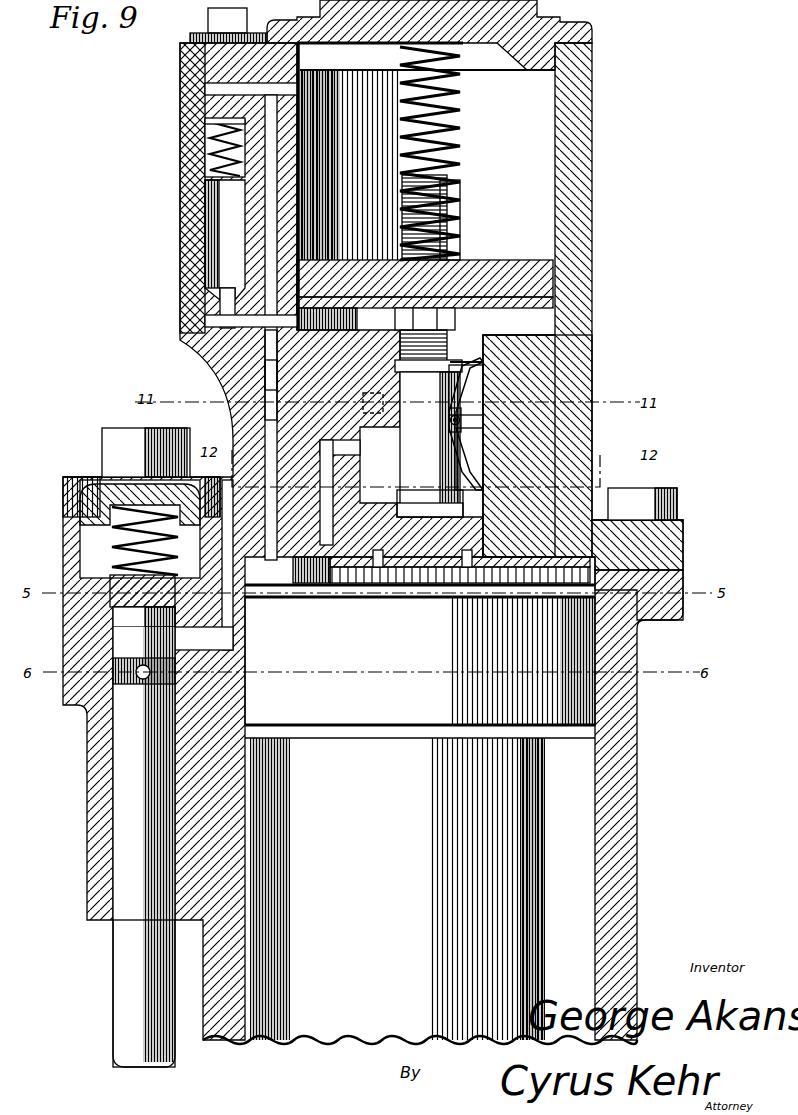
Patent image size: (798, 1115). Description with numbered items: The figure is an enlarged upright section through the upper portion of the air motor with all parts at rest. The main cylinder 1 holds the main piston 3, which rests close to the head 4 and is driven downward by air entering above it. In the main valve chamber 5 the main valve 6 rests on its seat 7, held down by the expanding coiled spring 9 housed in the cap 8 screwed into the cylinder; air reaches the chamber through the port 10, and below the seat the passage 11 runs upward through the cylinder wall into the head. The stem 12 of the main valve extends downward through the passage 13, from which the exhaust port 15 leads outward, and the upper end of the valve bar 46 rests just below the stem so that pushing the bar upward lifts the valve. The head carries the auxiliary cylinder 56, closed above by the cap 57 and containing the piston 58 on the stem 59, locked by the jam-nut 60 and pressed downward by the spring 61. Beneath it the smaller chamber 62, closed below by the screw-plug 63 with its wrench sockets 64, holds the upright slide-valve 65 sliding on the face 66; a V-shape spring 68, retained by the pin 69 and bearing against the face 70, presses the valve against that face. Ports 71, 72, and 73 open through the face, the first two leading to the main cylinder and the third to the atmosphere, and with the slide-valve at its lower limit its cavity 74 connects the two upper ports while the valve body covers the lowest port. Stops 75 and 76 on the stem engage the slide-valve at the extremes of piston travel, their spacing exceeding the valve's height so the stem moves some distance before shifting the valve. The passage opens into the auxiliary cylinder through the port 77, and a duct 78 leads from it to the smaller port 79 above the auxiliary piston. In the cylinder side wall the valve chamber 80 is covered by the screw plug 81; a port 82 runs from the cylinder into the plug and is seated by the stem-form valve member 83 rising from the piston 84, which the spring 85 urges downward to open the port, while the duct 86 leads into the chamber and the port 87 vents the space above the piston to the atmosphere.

The main cylinder 1 is at (627, 813).
The main piston 3 is at (530, 678).
The head 4 is at (673, 538).
The main valve chamber 5 is at (77, 477).
The main valve 6 is at (110, 610).
The seat 7 is at (110, 627).
The cap 8 is at (113, 433).
The expanding coiled spring 9 is at (90, 528).
The port 10 is at (90, 557).
The port or passage 11 is at (270, 420).
The stem 12 is at (137, 788).
The passage 13 is at (334, 319).
The exhaust port 15 is at (90, 720).
The valve bar 46 is at (130, 958).
The auxiliary cylinder 56 is at (530, 170).
The cap 57 is at (593, 27).
The piston 58 is at (560, 268).
The stem 59 is at (450, 214).
The jam-nut 60 is at (592, 297).
The expanding coiled spring 61 is at (462, 104).
The chamber 62 is at (592, 333).
The screw-plug 63 is at (467, 567).
The wrench sockets 64 is at (380, 567).
The slide-valve 65 is at (592, 374).
The face 66 is at (268, 370).
The V-shape spring 68 is at (592, 358).
The pin 69 is at (592, 417).
The face 70 is at (592, 383).
The port 71 is at (340, 573).
The port 72 is at (307, 570).
The port 73 is at (358, 365).
The cavity 74 is at (592, 443).
The stop 75 is at (592, 472).
The stop 76 is at (592, 318).
The port 77 is at (290, 345).
The duct or passage 78 is at (272, 228).
The port 79 is at (302, 118).
The valve chamber 80 is at (220, 250).
The screw plug 81 is at (200, 45).
The port 82 is at (243, 90).
The stem-form valve member 83 is at (207, 140).
The piston 84 is at (220, 205).
The expanding coiled spring 85 is at (197, 160).
The duct 86 is at (290, 323).
The port 87 is at (190, 130).